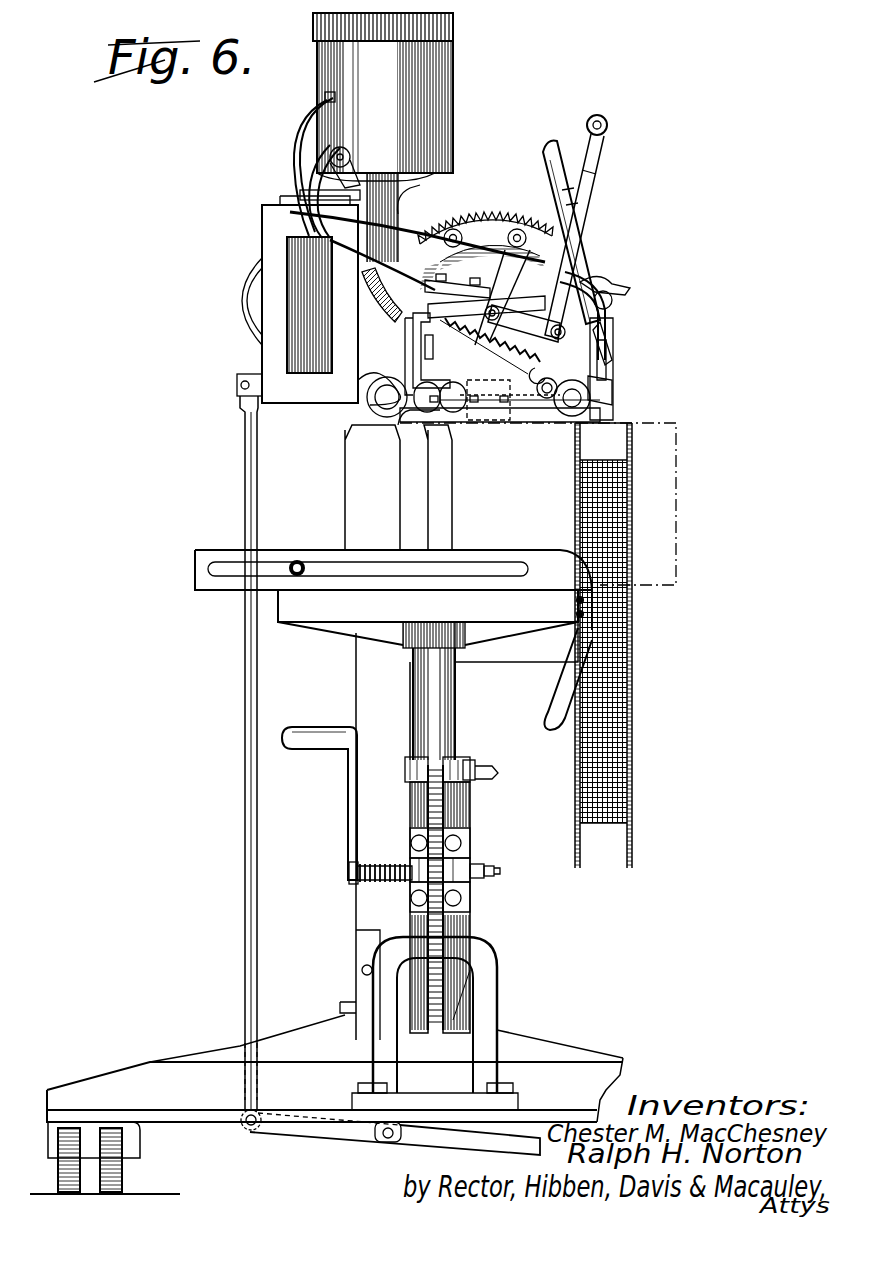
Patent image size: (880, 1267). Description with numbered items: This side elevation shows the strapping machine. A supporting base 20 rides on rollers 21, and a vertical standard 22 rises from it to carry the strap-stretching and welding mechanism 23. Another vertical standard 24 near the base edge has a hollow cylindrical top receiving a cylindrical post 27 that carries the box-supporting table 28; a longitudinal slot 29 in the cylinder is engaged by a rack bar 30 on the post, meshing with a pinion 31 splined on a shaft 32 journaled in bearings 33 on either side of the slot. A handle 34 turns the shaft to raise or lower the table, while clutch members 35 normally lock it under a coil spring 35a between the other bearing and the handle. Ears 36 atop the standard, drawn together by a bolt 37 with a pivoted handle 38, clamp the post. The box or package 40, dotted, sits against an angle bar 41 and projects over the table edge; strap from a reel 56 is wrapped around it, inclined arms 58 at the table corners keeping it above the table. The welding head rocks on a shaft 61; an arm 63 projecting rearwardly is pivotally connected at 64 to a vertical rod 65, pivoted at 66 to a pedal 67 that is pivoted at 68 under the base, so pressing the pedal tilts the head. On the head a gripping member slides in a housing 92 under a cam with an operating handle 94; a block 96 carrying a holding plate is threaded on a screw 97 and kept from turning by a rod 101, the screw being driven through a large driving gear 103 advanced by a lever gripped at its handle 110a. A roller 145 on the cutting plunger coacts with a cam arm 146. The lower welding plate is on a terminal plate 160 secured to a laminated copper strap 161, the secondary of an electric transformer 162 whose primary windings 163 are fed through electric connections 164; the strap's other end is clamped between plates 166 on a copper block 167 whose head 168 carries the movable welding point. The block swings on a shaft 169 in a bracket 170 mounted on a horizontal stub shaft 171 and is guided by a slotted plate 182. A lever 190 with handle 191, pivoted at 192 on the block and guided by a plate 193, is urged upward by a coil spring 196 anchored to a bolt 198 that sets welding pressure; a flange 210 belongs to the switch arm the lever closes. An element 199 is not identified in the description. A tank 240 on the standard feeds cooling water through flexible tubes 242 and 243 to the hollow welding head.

The supporting base 20 is at (130, 1072).
The rollers 21 is at (125, 1172).
The vertical standard 22 is at (356, 700).
The strap-stretching and welding mechanism 23 is at (635, 228).
The vertical standard 24 is at (470, 830).
The cylindrical post 27 is at (412, 692).
The box-supporting table 28 is at (345, 612).
The longitudinal slot 29 is at (470, 803).
The rack bar 30 is at (445, 945).
The pinion 31 is at (470, 896).
The shaft 32 is at (490, 878).
The bearings 33 is at (418, 862).
The handle 34 is at (350, 795).
The clutch members 35 is at (478, 884).
The coil spring 35a is at (375, 878).
The ears 36 is at (414, 765).
The bolt 37 is at (468, 768).
The pivoted handle 38 is at (496, 768).
The box or package 40 is at (676, 545).
The angle bar 41 is at (195, 555).
The reel 56 is at (643, 624).
The inclined arms 58 is at (550, 686).
The shaft 61 is at (380, 412).
The arm 63 is at (240, 378).
The pivotal connection 64 is at (240, 388).
The vertical rod 65 is at (242, 470).
The pivot 66 is at (248, 1134).
The pedal 67 is at (338, 1138).
The pivot 68 is at (387, 1142).
The housing 92 is at (600, 392).
The operating handle 94 is at (613, 360).
The block 96 is at (582, 418).
The screw 97 is at (582, 404).
The rod 101 is at (556, 381).
The large driving gear 103 is at (493, 212).
The handle 110a is at (345, 148).
The roller 145 is at (620, 303).
The cam arm 146 is at (628, 287).
The terminal plate 160 is at (520, 425).
The laminated copper strap 161 is at (425, 235).
The electric transformer 162 is at (285, 245).
The primary windings 163 is at (258, 290).
The electric connections 164 is at (410, 192).
The plates 166 is at (455, 290).
The block 167 is at (460, 415).
The head 168 is at (616, 346).
The shaft 169 is at (385, 410).
The bracket 170 is at (360, 385).
The horizontal stub shaft 171 is at (405, 430).
The plate 182 is at (570, 337).
The lever 190 is at (572, 222).
The handle 191 is at (605, 118).
The pivot 192 is at (432, 410).
The plate 193 is at (509, 351).
The coil spring 196 is at (487, 422).
The bolt 198 is at (438, 356).
The guide 199 is at (439, 350).
The flange 210 is at (505, 240).
The tank 240 is at (455, 80).
The flexible tube 242 is at (320, 118).
The flexible tube 243 is at (312, 165).